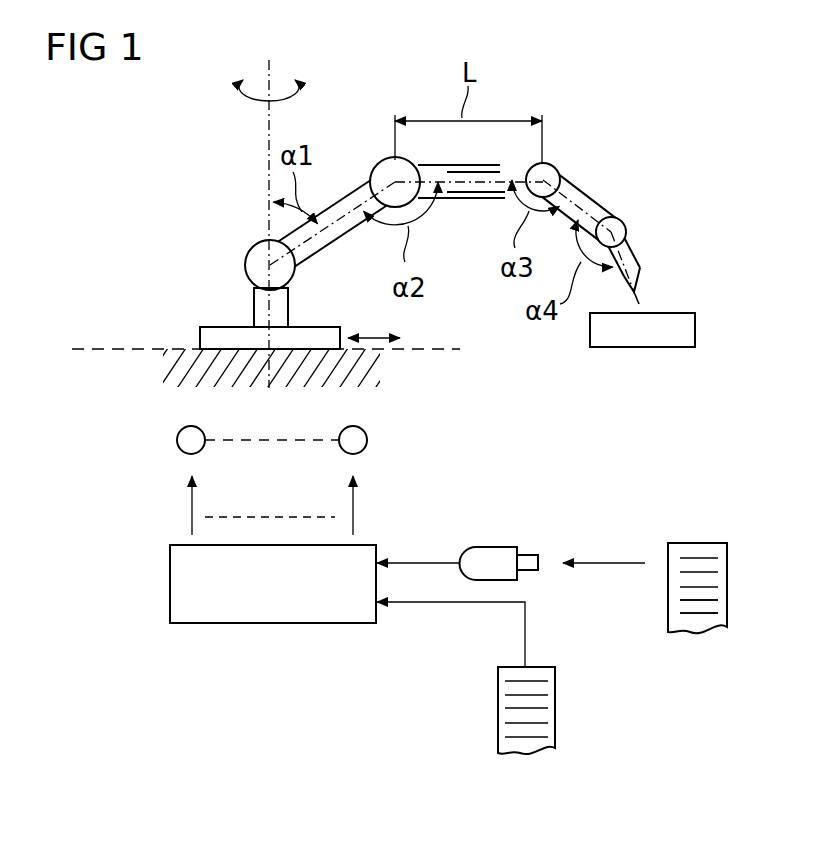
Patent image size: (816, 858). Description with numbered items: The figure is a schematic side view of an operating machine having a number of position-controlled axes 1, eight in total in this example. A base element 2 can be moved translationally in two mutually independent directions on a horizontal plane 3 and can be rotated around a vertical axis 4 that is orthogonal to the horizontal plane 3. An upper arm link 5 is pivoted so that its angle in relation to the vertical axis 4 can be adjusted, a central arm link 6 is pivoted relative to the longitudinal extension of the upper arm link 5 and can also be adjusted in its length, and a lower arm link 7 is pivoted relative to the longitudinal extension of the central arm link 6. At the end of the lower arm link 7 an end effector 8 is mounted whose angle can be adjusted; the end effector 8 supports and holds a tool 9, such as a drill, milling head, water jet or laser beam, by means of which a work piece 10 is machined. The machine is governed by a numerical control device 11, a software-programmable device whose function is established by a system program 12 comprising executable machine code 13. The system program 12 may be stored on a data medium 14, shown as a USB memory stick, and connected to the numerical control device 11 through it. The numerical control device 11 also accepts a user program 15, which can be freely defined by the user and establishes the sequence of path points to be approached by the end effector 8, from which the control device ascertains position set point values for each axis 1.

The position-controlled axes 1 is at (160, 432).
The base element 2 is at (218, 326).
The horizontal plane 3 is at (432, 352).
The vertical axis 4 is at (268, 165).
The upper arm link 5 is at (343, 238).
The central arm link 6 is at (470, 200).
The lower arm link 7 is at (584, 195).
The end effector 8 is at (638, 257).
The tool 9 is at (641, 292).
The work piece 10 is at (695, 330).
The numerical control device 11 is at (170, 587).
The system program 12 is at (696, 543).
The machine code 13 is at (714, 611).
The data medium 14 is at (492, 547).
The user program 15 is at (556, 700).